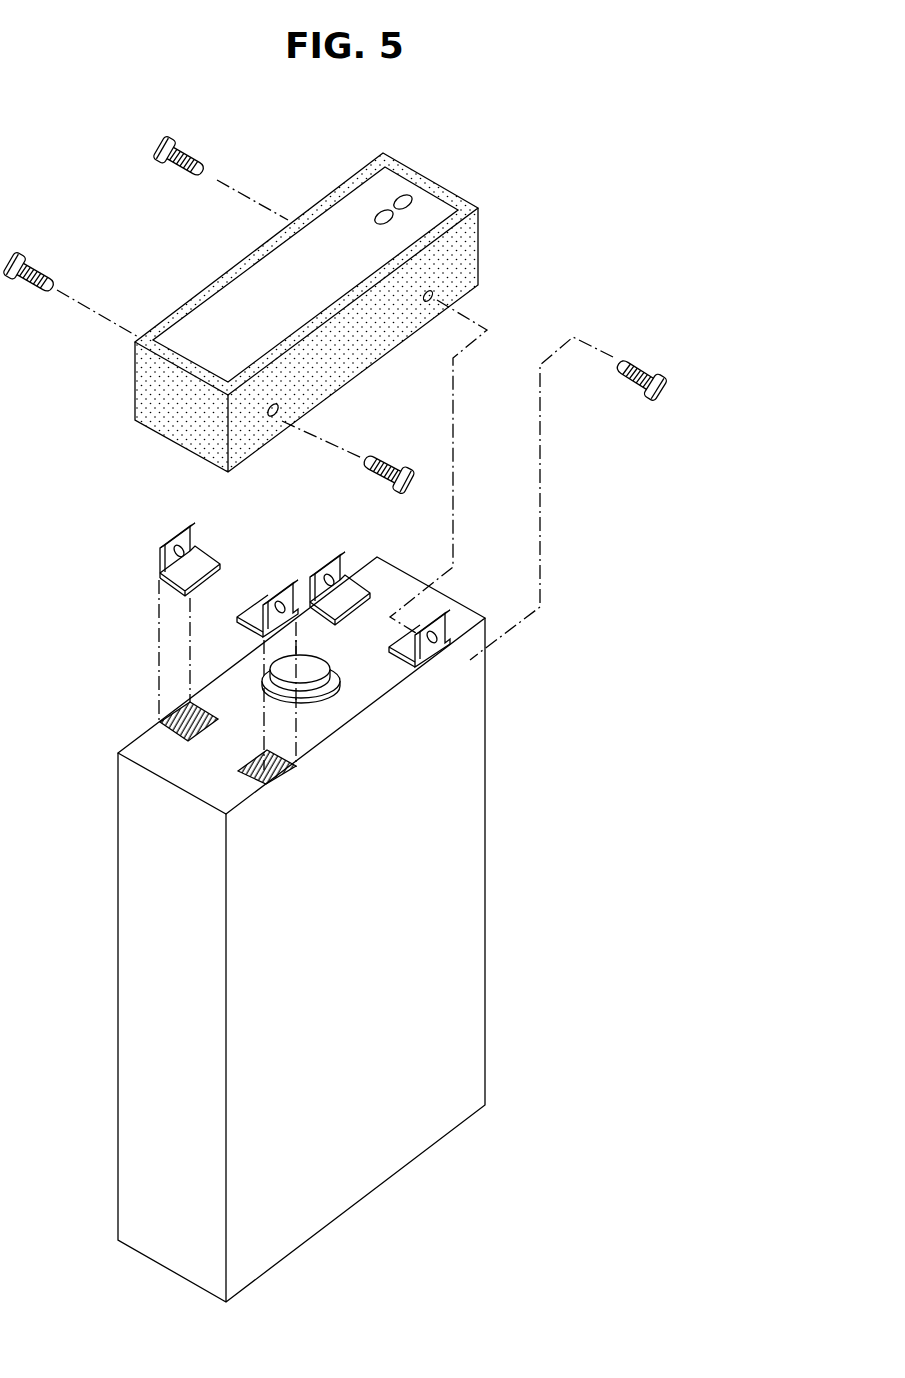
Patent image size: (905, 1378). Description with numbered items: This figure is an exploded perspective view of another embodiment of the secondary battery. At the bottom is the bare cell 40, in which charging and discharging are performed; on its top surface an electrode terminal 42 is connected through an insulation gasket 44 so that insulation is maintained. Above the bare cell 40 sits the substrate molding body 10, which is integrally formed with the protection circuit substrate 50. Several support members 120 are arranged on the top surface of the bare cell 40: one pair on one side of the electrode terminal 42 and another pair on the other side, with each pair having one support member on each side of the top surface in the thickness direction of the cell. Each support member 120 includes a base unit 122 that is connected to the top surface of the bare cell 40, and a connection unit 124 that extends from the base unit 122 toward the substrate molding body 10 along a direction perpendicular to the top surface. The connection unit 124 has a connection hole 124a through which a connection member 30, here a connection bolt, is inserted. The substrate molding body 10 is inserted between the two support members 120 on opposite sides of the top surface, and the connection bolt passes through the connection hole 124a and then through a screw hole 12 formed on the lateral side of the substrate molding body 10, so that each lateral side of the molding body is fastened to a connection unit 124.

The substrate molding body 10 is at (134, 399).
The screw hole 12 is at (280, 417).
The connection member 30 is at (641, 367).
The bare cell 40 is at (472, 862).
The electrode terminal 42 is at (312, 684).
The insulation gasket 44 is at (340, 671).
The protection circuit substrate 50 is at (357, 208).
The support member 120 is at (451, 596).
The base unit 122 is at (186, 582).
The connection unit 124 is at (162, 567).
The connection hole 124a is at (178, 546).